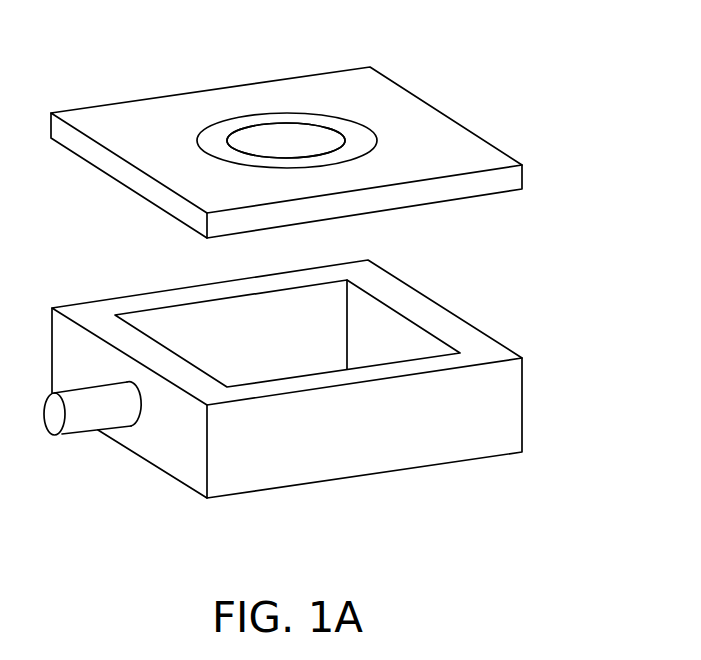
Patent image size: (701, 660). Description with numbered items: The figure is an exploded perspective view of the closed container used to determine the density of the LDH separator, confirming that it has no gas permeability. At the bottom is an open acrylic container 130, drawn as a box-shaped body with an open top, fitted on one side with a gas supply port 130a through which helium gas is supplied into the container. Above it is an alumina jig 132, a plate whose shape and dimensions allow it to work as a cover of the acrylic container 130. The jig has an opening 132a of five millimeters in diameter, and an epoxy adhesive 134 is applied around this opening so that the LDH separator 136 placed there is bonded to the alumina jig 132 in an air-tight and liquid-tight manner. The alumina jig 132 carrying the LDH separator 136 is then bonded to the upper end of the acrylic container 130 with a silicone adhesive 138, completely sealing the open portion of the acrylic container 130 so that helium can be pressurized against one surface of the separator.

The acrylic container 130 is at (498, 417).
The gas supply port 130a is at (85, 418).
The alumina jig 132 is at (453, 153).
The opening 132a is at (243, 123).
The epoxy adhesive 134 is at (357, 137).
The LDH separator 136 is at (297, 135).
The silicone adhesive 138 is at (432, 318).